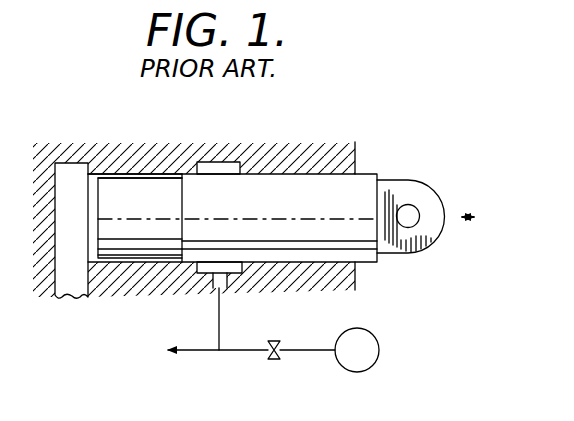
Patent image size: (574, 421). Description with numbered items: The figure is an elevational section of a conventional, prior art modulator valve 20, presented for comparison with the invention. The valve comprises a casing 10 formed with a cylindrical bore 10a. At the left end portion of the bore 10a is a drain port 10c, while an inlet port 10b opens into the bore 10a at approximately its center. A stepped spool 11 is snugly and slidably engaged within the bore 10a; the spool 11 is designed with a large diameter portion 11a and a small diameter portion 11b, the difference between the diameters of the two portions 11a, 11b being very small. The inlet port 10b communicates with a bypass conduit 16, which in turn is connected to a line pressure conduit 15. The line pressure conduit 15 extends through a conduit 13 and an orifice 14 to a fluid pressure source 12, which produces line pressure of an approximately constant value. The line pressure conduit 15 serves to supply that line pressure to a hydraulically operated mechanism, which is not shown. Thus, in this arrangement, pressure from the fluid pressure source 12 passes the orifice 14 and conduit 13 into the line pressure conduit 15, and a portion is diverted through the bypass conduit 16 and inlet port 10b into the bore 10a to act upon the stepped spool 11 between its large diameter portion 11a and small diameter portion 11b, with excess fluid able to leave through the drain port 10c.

The casing 10 is at (282, 160).
The cylindrical bore 10a is at (117, 181).
The inlet port 10b is at (215, 275).
The drain port 10c is at (57, 281).
The stepped spool 11 is at (342, 190).
The large diameter portion 11a is at (213, 193).
The small diameter portion 11b is at (138, 193).
The fluid pressure source 12 is at (372, 368).
The conduit 13 is at (310, 353).
The orifice 14 is at (277, 361).
The line pressure conduit 15 is at (237, 352).
The bypass conduit 16 is at (221, 315).
The modulator valve 20 is at (344, 127).